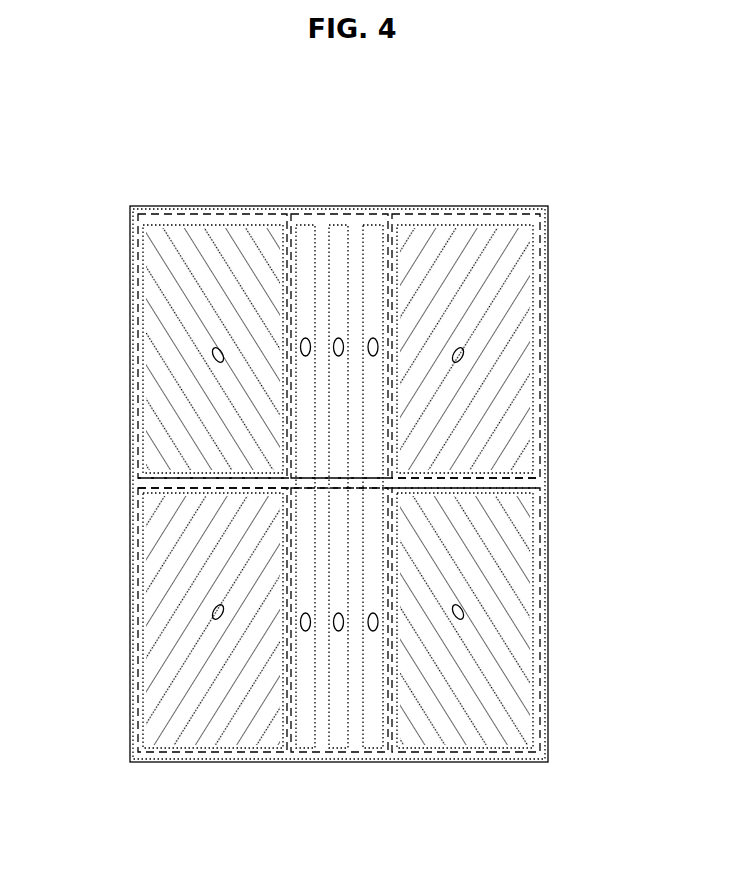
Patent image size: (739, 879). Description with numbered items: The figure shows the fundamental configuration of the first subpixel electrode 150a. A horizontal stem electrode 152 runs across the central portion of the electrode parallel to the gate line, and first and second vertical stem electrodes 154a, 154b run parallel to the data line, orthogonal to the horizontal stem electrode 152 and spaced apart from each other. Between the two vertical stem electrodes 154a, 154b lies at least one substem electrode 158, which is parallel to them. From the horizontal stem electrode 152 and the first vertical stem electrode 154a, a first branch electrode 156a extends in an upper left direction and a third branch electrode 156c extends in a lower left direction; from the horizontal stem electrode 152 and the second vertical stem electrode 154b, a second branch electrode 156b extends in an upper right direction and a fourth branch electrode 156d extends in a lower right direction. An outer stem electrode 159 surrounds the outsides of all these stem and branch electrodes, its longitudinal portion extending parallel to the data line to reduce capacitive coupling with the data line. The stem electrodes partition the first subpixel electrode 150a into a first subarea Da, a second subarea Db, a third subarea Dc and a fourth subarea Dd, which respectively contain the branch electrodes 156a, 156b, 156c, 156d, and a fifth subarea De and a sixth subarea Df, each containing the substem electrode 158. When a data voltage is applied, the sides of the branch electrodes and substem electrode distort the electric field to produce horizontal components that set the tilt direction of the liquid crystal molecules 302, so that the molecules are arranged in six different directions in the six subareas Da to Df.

The first subpixel electrode 150a is at (585, 172).
The outer stem electrode 159 is at (520, 206).
The horizontal stem electrode 152 is at (535, 483).
The first vertical stem electrode 154a is at (283, 220).
The second vertical stem electrode 154b is at (392, 228).
The substem electrode 158 is at (355, 228).
The first branch electrode 156a is at (208, 260).
The second branch electrode 156b is at (470, 257).
The third branch electrode 156c is at (203, 662).
The fourth branch electrode 156d is at (470, 652).
The liquid crystal molecules 302 is at (460, 360).
The first subarea Da is at (140, 335).
The second subarea Db is at (540, 335).
The third subarea Dc is at (140, 587).
The fourth subarea Dd is at (540, 588).
The fifth subarea De is at (370, 215).
The sixth subarea Df is at (337, 762).